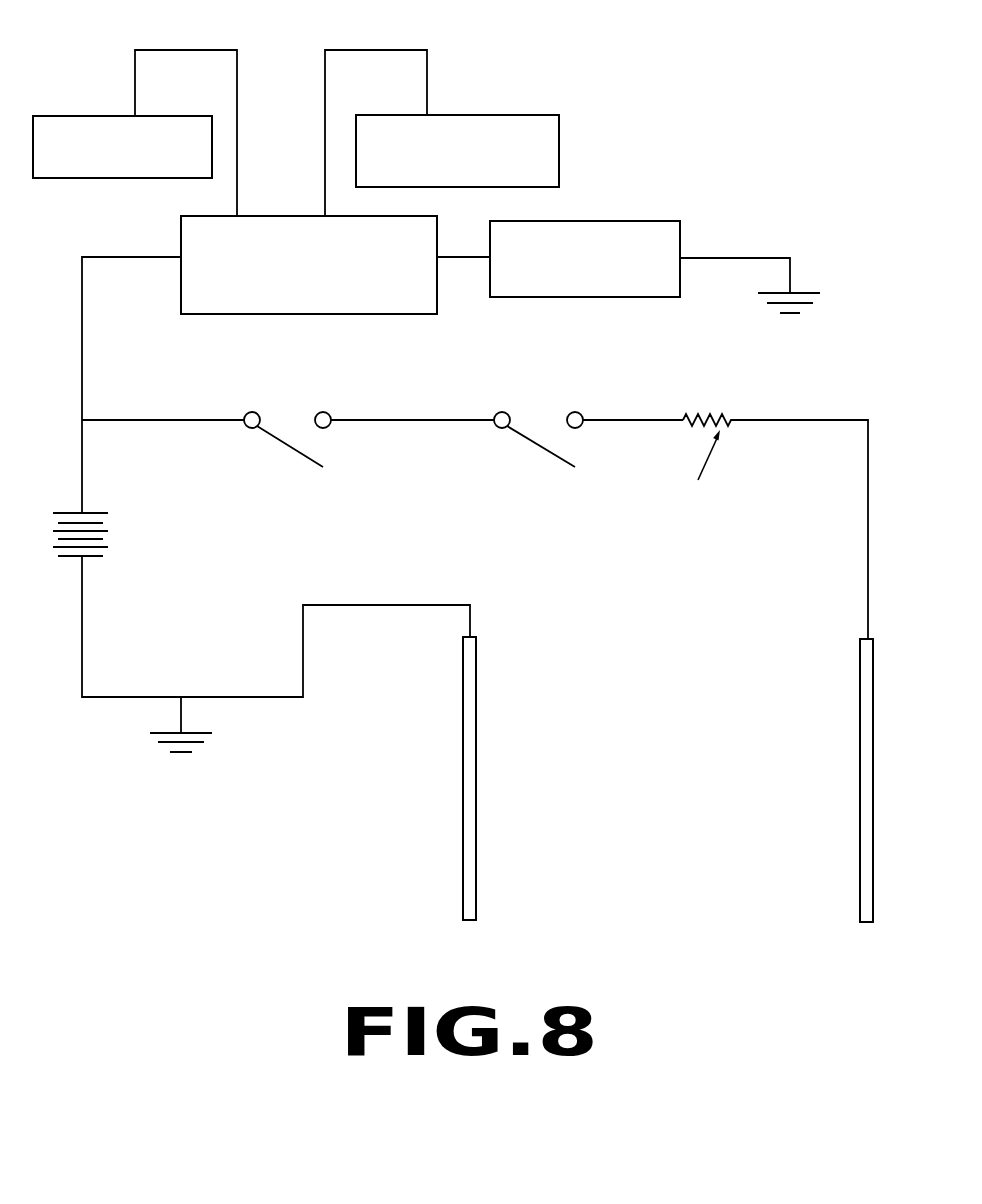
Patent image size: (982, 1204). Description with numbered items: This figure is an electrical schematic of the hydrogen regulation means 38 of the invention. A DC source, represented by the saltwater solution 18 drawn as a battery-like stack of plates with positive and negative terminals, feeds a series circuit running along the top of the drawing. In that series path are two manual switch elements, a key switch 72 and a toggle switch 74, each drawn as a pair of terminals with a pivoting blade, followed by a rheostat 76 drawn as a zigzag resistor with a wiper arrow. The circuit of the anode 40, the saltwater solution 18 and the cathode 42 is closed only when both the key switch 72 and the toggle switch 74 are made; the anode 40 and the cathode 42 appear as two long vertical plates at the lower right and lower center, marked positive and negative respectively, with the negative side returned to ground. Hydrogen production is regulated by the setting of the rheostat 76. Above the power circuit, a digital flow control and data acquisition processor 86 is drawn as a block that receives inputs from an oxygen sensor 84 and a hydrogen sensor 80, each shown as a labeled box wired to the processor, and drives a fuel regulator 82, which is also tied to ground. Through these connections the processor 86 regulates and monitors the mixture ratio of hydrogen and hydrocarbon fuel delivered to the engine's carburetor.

The hydrogen regulation means 38 is at (640, 145).
The oxygen sensor 84 is at (81, 156).
The hydrogen sensor 80 is at (523, 176).
The digital flow control and data acquisition processor 86 is at (426, 265).
The fuel regulator 82 is at (663, 255).
The saltwater solution 18 is at (98, 513).
The key switch 72 is at (323, 428).
The toggle switch 74 is at (575, 428).
The rheostat 76 is at (722, 430).
The cathode 42 is at (476, 773).
The anode 40 is at (860, 778).